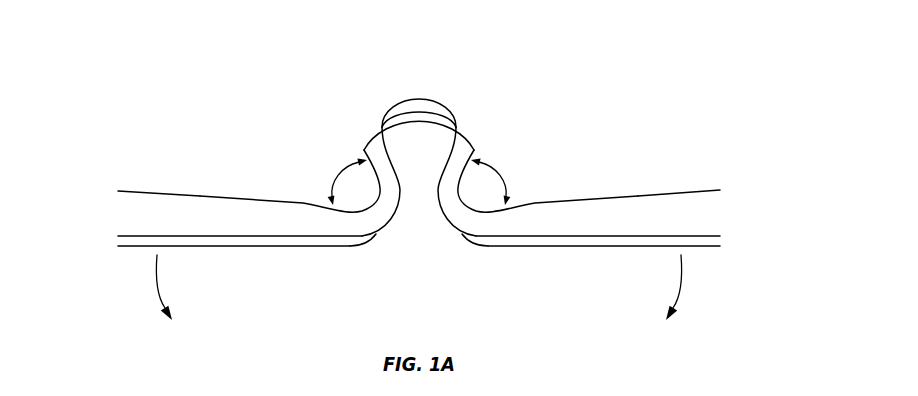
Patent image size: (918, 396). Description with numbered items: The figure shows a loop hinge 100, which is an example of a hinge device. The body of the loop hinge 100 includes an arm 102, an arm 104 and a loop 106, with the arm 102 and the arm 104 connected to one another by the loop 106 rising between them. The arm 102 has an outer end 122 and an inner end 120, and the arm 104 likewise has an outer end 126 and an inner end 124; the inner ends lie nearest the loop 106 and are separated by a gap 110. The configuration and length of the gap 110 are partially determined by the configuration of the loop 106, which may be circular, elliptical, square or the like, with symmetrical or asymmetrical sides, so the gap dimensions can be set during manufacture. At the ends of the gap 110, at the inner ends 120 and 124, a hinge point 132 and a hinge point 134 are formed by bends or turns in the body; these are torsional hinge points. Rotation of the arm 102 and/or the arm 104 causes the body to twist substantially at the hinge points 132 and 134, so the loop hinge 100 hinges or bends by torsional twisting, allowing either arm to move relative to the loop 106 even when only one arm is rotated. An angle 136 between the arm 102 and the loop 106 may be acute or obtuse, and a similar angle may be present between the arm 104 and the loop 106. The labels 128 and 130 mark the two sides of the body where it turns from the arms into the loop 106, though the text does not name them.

The loop hinge 100 is at (558, 89).
The arm 102 is at (277, 205).
The arm 104 is at (572, 207).
The loop 106 is at (385, 66).
The gap 110 is at (395, 238).
The inner end 120 is at (365, 246).
The outer end 122 is at (137, 203).
The inner end 124 is at (473, 236).
The outer end 126 is at (700, 203).
The first neck wall 128 is at (393, 208).
The second neck wall 130 is at (446, 221).
The hinge point 132 is at (379, 250).
The hinge point 134 is at (462, 250).
The angle 136 is at (343, 177).